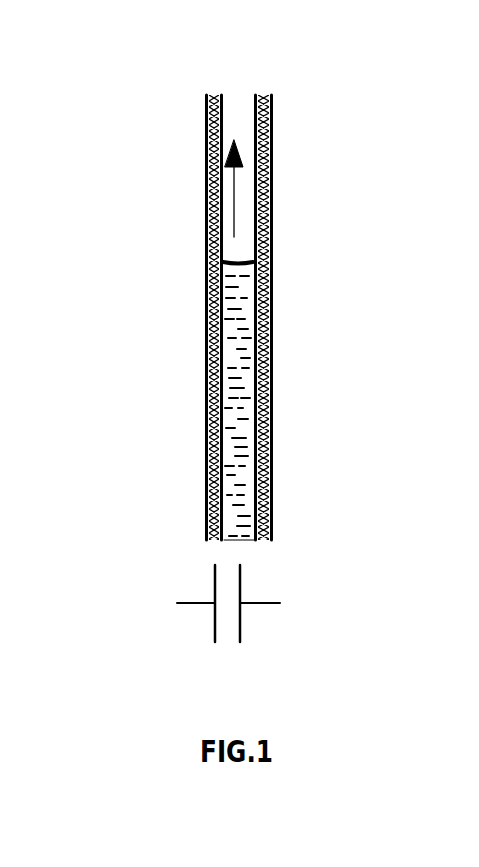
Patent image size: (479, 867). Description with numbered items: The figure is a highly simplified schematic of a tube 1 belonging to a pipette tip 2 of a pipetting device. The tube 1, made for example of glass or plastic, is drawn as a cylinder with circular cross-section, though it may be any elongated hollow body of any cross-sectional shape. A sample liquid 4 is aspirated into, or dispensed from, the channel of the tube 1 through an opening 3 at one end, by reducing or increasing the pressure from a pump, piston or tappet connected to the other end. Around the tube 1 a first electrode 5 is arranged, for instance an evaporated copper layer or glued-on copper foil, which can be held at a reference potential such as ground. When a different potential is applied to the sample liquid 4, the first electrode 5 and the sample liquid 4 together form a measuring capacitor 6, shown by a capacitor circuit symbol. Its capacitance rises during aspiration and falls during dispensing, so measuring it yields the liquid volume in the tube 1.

The tube 1 is at (265, 183).
The pipette tip 2 is at (293, 334).
The opening 3 is at (243, 543).
The sample liquid 4 is at (239, 322).
The first electrode 5 is at (210, 312).
The measuring capacitor 6 is at (183, 634).